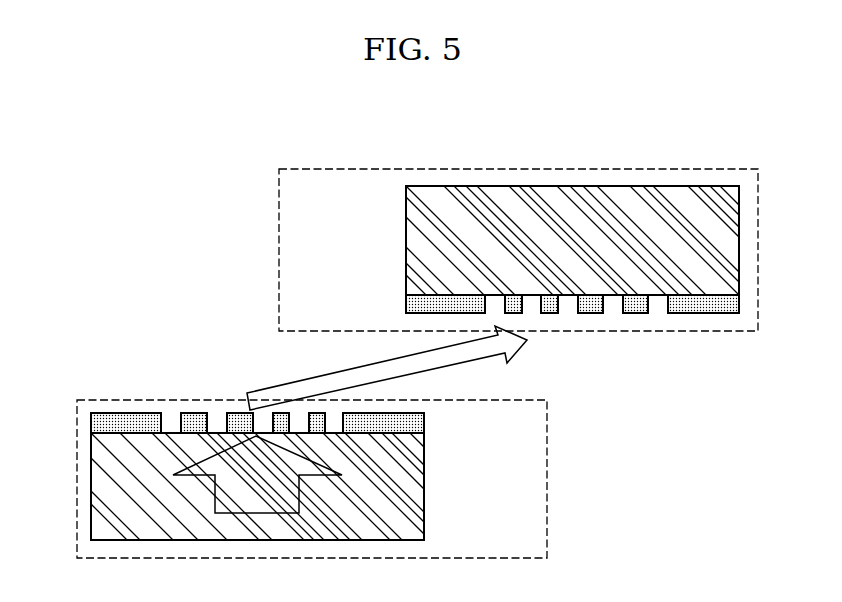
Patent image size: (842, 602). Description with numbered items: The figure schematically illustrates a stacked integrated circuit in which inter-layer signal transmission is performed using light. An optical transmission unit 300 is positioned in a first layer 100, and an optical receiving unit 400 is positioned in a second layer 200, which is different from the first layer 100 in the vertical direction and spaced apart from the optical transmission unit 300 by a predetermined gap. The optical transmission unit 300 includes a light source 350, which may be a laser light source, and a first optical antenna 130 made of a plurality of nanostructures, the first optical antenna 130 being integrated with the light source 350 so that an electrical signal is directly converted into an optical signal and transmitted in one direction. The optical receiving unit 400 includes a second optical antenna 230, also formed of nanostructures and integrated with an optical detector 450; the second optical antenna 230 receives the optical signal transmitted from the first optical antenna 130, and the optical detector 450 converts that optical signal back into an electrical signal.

The first layer 100 is at (547, 488).
The first optical antenna 130 is at (216, 412).
The second layer 200 is at (644, 169).
The second optical antenna 230 is at (602, 316).
The optical transmission unit 300 is at (268, 439).
The light source 350 is at (413, 487).
The optical receiving unit 400 is at (573, 254).
The optical detector 450 is at (411, 232).